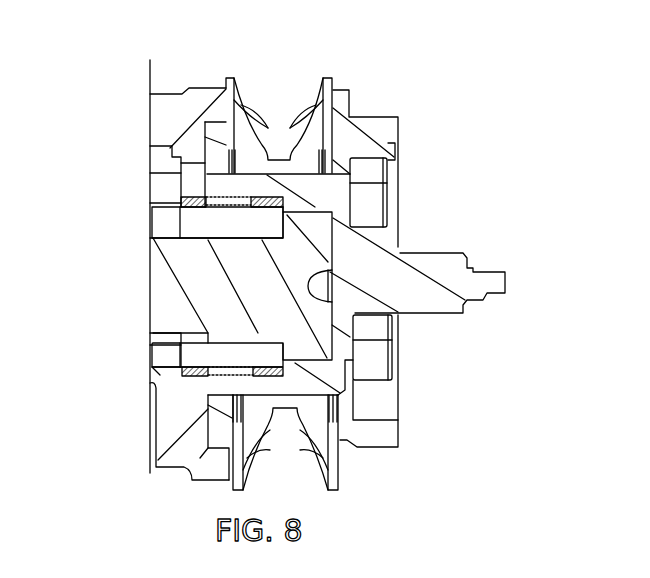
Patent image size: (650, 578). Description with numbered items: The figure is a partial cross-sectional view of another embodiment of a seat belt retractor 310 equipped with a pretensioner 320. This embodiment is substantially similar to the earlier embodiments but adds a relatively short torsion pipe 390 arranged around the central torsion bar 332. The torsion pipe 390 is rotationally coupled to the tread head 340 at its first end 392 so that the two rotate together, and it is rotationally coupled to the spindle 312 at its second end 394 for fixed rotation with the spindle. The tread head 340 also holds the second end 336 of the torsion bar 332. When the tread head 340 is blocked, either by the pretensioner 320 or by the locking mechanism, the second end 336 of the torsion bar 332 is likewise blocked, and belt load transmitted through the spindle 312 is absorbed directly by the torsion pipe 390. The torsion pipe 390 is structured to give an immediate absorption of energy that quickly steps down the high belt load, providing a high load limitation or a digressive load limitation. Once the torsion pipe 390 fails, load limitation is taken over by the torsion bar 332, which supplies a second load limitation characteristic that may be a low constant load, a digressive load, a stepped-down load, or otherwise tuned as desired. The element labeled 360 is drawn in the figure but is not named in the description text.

The retractor 310 is at (180, 63).
The spindle 312 is at (155, 110).
The pretensioner 320 is at (342, 80).
The torsion bar 332 is at (171, 319).
The second end of the torsion bar 336 is at (307, 243).
The tread head 340 is at (368, 152).
The pulley 360 is at (253, 110).
The torsion pipe 390 is at (181, 200).
The first end of the torsion pipe 392 is at (396, 177).
The second end of the torsion pipe 394 is at (183, 205).